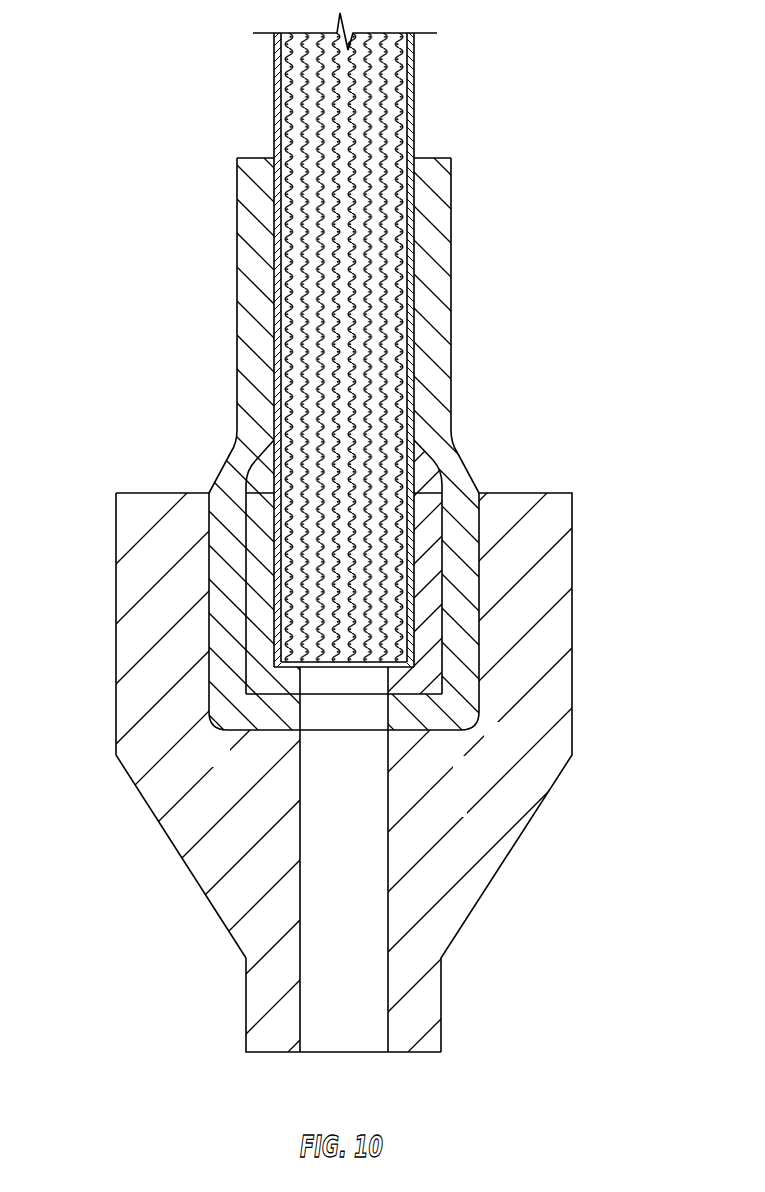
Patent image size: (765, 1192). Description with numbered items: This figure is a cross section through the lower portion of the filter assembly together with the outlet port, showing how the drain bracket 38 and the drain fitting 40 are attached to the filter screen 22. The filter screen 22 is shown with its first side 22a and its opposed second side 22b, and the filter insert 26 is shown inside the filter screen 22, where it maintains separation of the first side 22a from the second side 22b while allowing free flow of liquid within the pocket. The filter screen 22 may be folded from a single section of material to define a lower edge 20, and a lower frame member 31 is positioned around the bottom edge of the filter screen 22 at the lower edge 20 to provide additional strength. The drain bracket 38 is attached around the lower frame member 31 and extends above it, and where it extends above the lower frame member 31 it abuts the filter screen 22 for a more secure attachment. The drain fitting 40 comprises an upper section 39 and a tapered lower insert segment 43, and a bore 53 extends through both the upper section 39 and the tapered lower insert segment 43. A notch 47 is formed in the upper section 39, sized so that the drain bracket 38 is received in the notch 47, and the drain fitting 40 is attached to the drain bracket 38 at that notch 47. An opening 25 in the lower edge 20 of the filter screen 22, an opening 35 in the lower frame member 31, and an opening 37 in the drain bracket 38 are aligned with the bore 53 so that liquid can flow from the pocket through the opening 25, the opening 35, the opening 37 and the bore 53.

The filter screen 22 is at (346, 391).
The first side of filter screen 22a is at (275, 127).
The second side of filter screen 22b is at (414, 128).
The filter insert 26 is at (380, 87).
The drain bracket 38 is at (382, 450).
The notch 47 is at (209, 492).
The upper section 39 is at (116, 632).
The drain fitting 40 is at (573, 632).
The lower frame member 31 is at (428, 605).
The lower edge 20 is at (453, 729).
The opening 25 is at (312, 668).
The opening 35 is at (367, 680).
The opening 37 is at (343, 713).
The bore 53 is at (345, 816).
The tapered lower insert segment 43 is at (172, 847).